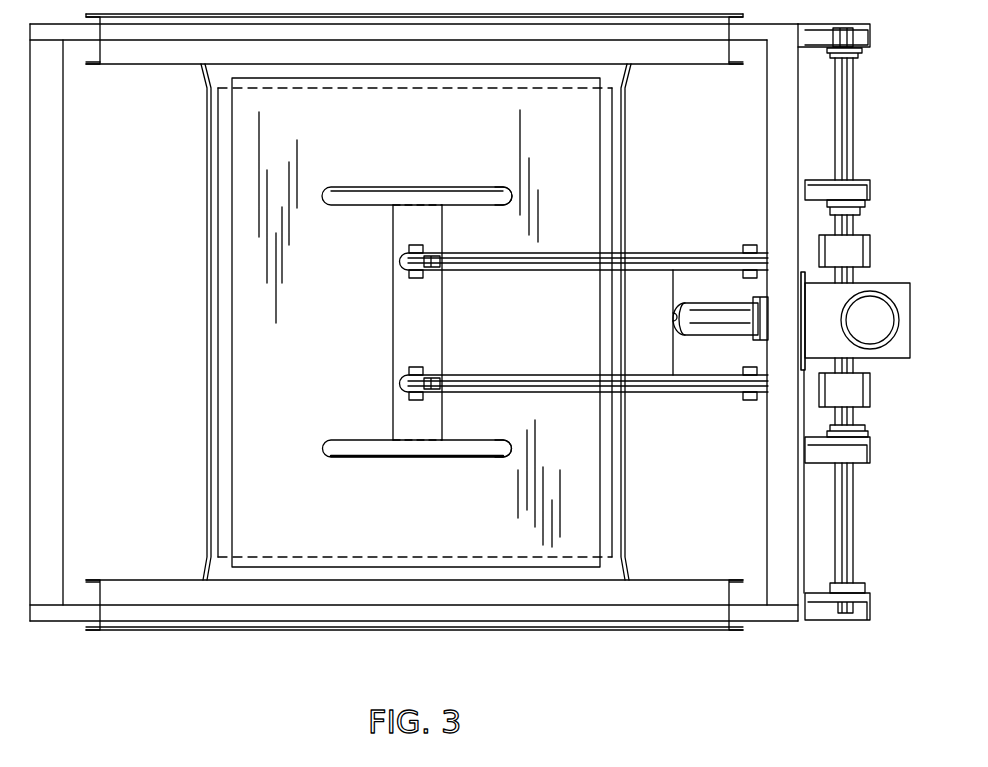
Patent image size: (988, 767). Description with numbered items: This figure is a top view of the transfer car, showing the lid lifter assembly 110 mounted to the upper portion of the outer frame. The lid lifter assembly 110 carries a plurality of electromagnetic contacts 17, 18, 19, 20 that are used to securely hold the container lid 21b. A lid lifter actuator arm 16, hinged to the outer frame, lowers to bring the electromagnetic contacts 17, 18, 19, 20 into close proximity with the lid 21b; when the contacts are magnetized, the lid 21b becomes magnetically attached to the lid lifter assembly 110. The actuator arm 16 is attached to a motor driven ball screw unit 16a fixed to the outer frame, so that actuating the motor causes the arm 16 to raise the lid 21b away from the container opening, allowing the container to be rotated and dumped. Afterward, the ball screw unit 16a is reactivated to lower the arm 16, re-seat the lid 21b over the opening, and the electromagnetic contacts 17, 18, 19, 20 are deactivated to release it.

The lid lifter assembly 110 is at (688, 504).
The lid 21b is at (312, 527).
The electromagnetic contact 17 is at (335, 187).
The electromagnetic contact 18 is at (507, 188).
The electromagnetic contact 19 is at (334, 462).
The electromagnetic contact 20 is at (500, 458).
The lid lifter actuator arm 16 is at (639, 251).
The motor driven ball screw unit 16a is at (720, 332).